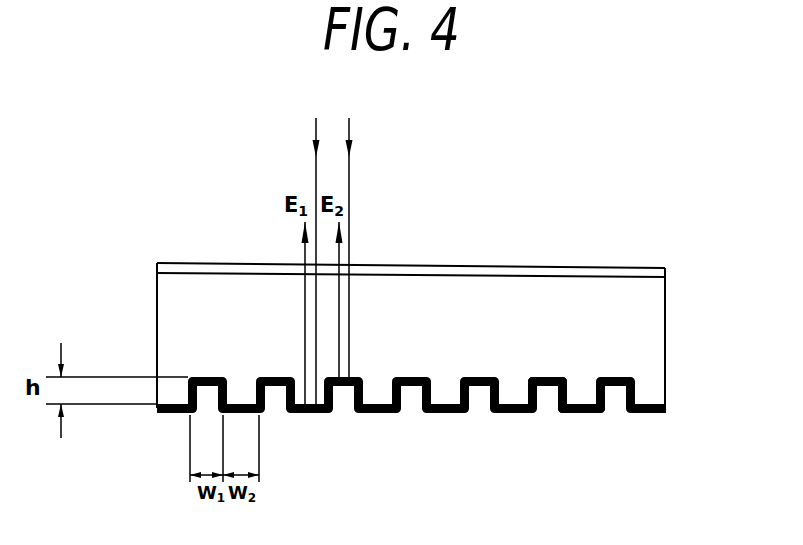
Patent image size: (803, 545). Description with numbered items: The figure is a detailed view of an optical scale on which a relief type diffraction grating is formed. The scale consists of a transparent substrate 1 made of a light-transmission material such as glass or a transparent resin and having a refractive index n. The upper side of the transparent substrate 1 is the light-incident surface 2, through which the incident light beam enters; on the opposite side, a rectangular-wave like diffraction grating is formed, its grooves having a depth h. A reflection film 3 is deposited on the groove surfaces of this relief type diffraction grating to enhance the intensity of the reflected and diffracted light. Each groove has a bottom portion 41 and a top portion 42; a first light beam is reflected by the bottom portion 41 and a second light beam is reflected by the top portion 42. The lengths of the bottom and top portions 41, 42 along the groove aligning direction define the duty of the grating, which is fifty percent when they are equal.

The transparent substrate 1 is at (652, 308).
The light-incident surface 2 is at (666, 266).
The reflection film 3 is at (647, 414).
The bottom portion of the groove 41 is at (509, 405).
The top portion of the groove 42 is at (554, 379).